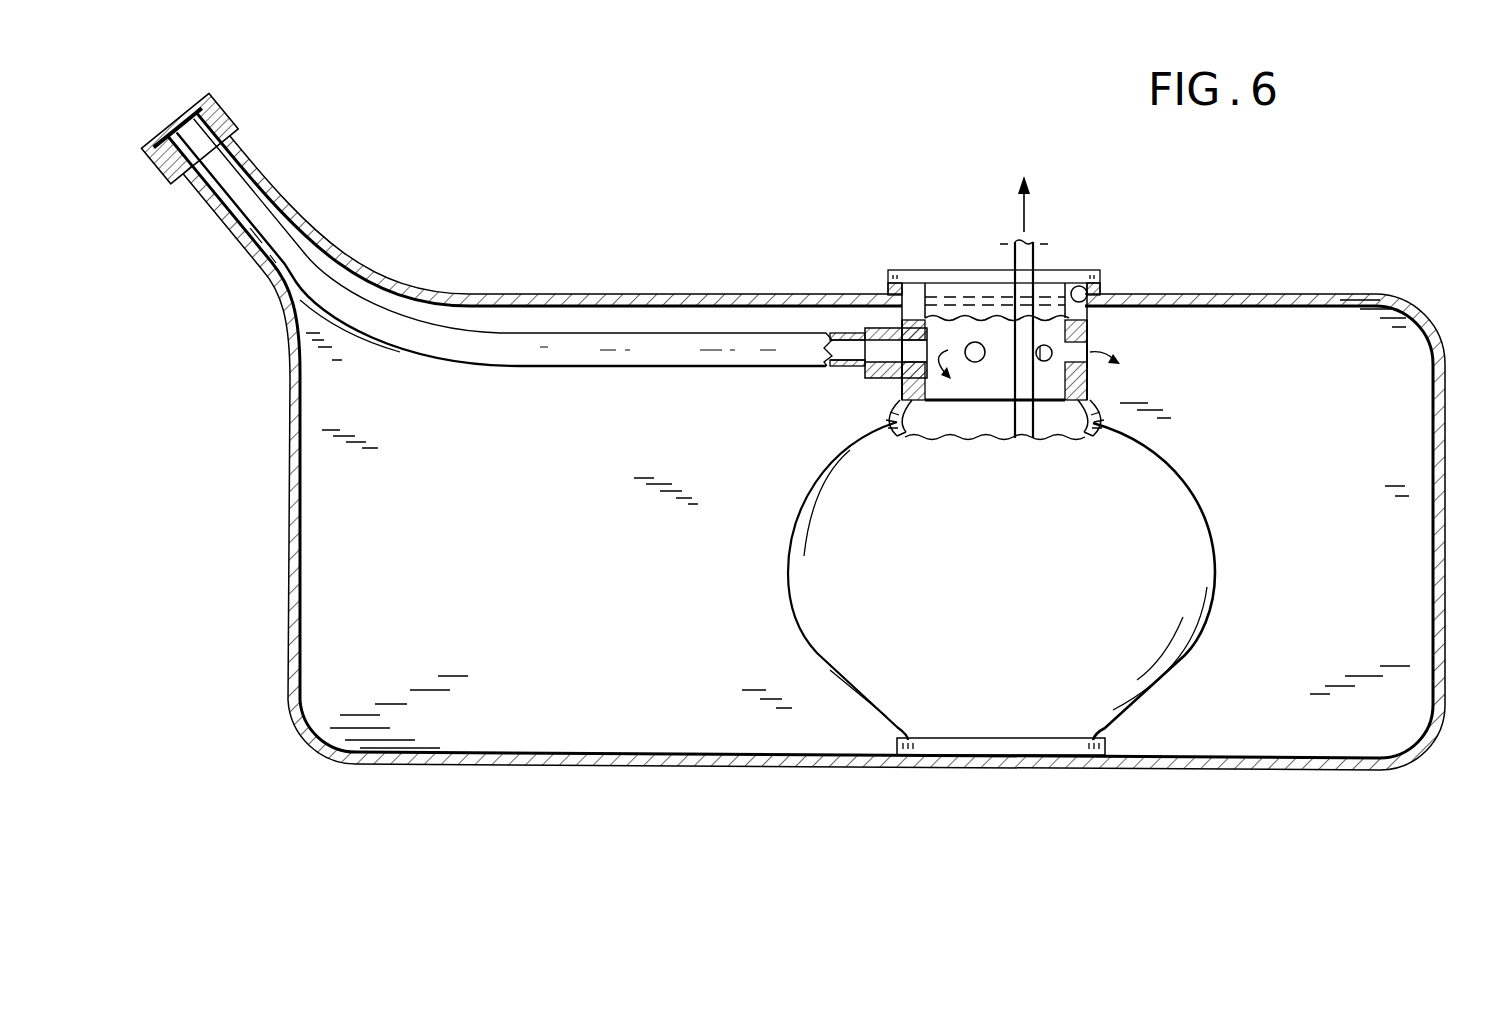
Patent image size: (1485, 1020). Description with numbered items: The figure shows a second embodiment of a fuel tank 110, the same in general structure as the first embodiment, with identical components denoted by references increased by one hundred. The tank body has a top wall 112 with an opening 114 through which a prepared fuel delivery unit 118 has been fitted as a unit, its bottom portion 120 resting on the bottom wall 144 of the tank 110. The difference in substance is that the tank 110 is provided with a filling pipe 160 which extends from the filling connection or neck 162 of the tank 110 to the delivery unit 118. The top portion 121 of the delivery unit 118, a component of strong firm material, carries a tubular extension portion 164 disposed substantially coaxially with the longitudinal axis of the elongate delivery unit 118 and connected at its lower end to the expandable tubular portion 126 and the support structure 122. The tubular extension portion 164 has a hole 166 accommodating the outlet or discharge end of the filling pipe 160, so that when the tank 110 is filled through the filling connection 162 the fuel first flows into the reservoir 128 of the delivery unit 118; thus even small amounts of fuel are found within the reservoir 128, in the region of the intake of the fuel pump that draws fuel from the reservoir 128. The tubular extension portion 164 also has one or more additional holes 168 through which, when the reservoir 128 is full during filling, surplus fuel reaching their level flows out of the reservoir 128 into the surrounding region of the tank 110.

The fuel tank 110 is at (747, 278).
The top wall 112 is at (1283, 298).
The opening 114 is at (1084, 276).
The delivery unit 118 is at (1218, 508).
The bottom portion 120 is at (1047, 748).
The top portion 121 is at (1056, 280).
The support structure 122 is at (918, 432).
The expandable tubular portion 126 is at (1168, 466).
The reservoir 128 is at (986, 412).
The bottom wall 144 is at (740, 766).
The filling pipe 160 is at (597, 367).
The filling connection 162 is at (243, 150).
The tubular extension portion 164 is at (1088, 378).
The hole 166 is at (902, 386).
The additional holes 168 is at (975, 341).